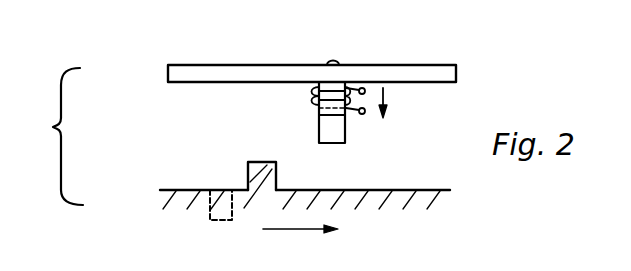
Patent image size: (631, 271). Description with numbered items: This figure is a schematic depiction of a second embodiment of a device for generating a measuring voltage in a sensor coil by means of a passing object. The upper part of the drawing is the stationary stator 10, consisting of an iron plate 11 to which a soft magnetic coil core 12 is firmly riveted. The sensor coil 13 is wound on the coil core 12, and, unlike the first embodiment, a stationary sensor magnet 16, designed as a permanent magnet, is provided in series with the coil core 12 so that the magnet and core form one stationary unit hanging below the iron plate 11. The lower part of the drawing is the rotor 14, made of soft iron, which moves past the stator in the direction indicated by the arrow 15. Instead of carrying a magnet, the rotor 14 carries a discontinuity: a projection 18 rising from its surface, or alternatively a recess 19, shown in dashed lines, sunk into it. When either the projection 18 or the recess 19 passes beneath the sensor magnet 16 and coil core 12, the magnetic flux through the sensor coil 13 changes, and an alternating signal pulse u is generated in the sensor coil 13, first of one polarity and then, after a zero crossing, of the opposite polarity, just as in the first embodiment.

The stator 10 is at (145, 90).
The iron plate 11 is at (419, 72).
The coil core 12 is at (318, 89).
The sensor coil 13 is at (351, 116).
The rotor 14 is at (142, 181).
The arrow 15 is at (296, 230).
The sensor magnet 16 is at (346, 143).
The projection 18 is at (277, 168).
The recess 19 is at (200, 217).